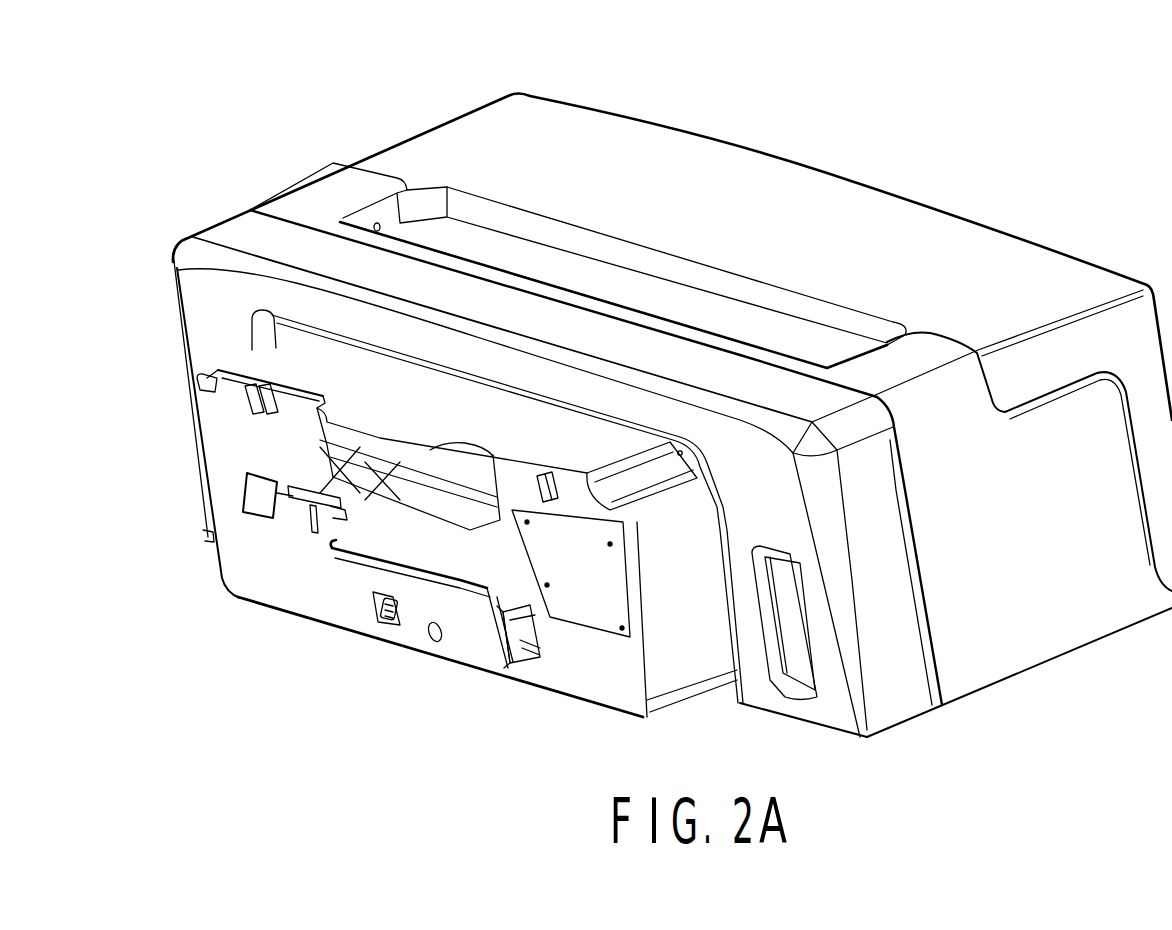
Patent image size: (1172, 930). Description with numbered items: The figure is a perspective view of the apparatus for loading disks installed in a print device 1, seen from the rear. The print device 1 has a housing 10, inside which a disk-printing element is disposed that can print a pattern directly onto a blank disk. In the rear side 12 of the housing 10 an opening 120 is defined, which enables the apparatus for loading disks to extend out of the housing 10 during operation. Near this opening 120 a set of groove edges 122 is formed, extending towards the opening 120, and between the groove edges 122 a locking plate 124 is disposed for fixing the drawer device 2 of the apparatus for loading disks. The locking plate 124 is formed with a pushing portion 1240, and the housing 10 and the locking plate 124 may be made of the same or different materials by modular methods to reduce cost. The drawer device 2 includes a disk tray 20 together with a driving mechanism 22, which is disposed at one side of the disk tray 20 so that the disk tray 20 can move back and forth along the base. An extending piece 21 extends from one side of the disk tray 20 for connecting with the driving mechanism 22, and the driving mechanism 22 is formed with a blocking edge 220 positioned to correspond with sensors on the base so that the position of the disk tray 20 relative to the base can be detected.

The print device 1 is at (977, 113).
The housing 10 is at (417, 133).
The rear side 12 is at (457, 663).
The opening 120 is at (386, 528).
The groove edges 122 is at (247, 473).
The locking plate 124 is at (290, 525).
The pushing portion 1240 is at (310, 537).
The drawer device 2 is at (378, 555).
The disk tray 20 is at (425, 548).
The extending piece 21 is at (502, 590).
The driving mechanism 22 is at (542, 652).
The blocking edge 220 is at (505, 667).